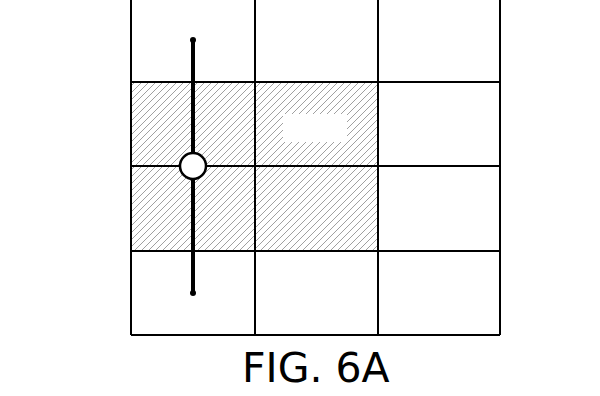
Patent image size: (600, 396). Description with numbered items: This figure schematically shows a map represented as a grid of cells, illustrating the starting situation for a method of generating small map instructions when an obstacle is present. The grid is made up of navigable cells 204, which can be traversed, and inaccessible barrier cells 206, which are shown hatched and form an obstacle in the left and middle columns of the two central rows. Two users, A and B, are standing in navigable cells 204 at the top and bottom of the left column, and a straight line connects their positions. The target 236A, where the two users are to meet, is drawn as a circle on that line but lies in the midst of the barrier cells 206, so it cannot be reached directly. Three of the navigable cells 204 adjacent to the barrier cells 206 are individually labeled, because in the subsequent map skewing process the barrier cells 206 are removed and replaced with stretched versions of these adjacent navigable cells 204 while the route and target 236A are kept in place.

The navigable cells 204 is at (291, 54).
The barrier cells 206 is at (291, 139).
The target 236A is at (180, 163).